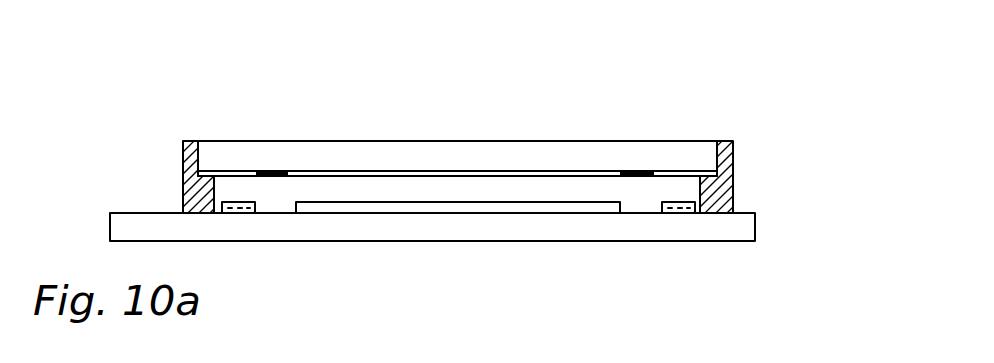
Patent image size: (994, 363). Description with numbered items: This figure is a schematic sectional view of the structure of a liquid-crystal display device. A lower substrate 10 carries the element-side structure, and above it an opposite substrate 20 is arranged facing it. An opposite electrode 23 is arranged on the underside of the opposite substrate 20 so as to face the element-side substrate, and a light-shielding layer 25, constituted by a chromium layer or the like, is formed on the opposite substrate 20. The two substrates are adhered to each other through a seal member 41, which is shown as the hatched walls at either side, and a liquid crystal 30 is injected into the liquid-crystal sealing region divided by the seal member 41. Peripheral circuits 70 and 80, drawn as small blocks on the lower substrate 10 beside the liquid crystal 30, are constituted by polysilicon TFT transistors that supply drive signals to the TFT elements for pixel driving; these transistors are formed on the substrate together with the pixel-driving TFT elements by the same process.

The substrate 10 is at (737, 232).
The opposite substrate 20 is at (662, 158).
The opposite electrode 23 is at (387, 172).
The light-shielding layer 25 is at (276, 171).
The liquid crystal 30 is at (462, 188).
The seal member 41 is at (753, 141).
The peripheral circuit 70 is at (231, 200).
The peripheral circuit 80 is at (683, 215).